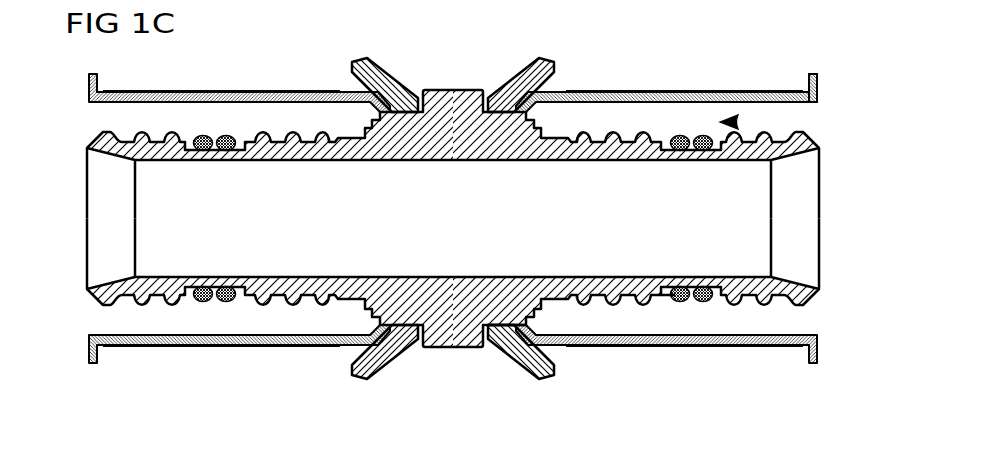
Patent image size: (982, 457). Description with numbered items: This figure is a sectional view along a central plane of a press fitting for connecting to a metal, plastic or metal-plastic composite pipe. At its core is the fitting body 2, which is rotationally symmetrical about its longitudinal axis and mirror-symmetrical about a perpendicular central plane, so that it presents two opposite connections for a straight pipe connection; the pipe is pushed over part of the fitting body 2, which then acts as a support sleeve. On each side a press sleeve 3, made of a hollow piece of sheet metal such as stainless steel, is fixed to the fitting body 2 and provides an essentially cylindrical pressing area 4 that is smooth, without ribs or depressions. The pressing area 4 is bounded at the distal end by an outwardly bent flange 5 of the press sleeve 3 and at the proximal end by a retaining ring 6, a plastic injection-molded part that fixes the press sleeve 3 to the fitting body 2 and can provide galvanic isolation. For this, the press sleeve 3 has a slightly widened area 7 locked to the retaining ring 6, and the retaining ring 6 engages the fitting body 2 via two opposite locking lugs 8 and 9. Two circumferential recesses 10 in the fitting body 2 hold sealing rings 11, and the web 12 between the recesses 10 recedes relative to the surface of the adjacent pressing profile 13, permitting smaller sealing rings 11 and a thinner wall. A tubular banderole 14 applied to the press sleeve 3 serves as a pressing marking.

The fitting body 2 is at (102, 143).
The press sleeve 3 is at (265, 344).
The pressing area 4 is at (810, 378).
The outwardly bent flange 5 is at (818, 77).
The retaining ring 6 is at (380, 371).
The widened area 7 is at (516, 95).
The locking lug 8 is at (491, 346).
The locking lug 9 is at (512, 322).
The circumferential recess 10 is at (702, 152).
The sealing ring 11 is at (702, 286).
The web 12 is at (692, 305).
The pressing profile 13 is at (736, 122).
The tubular banderole 14 is at (668, 90).